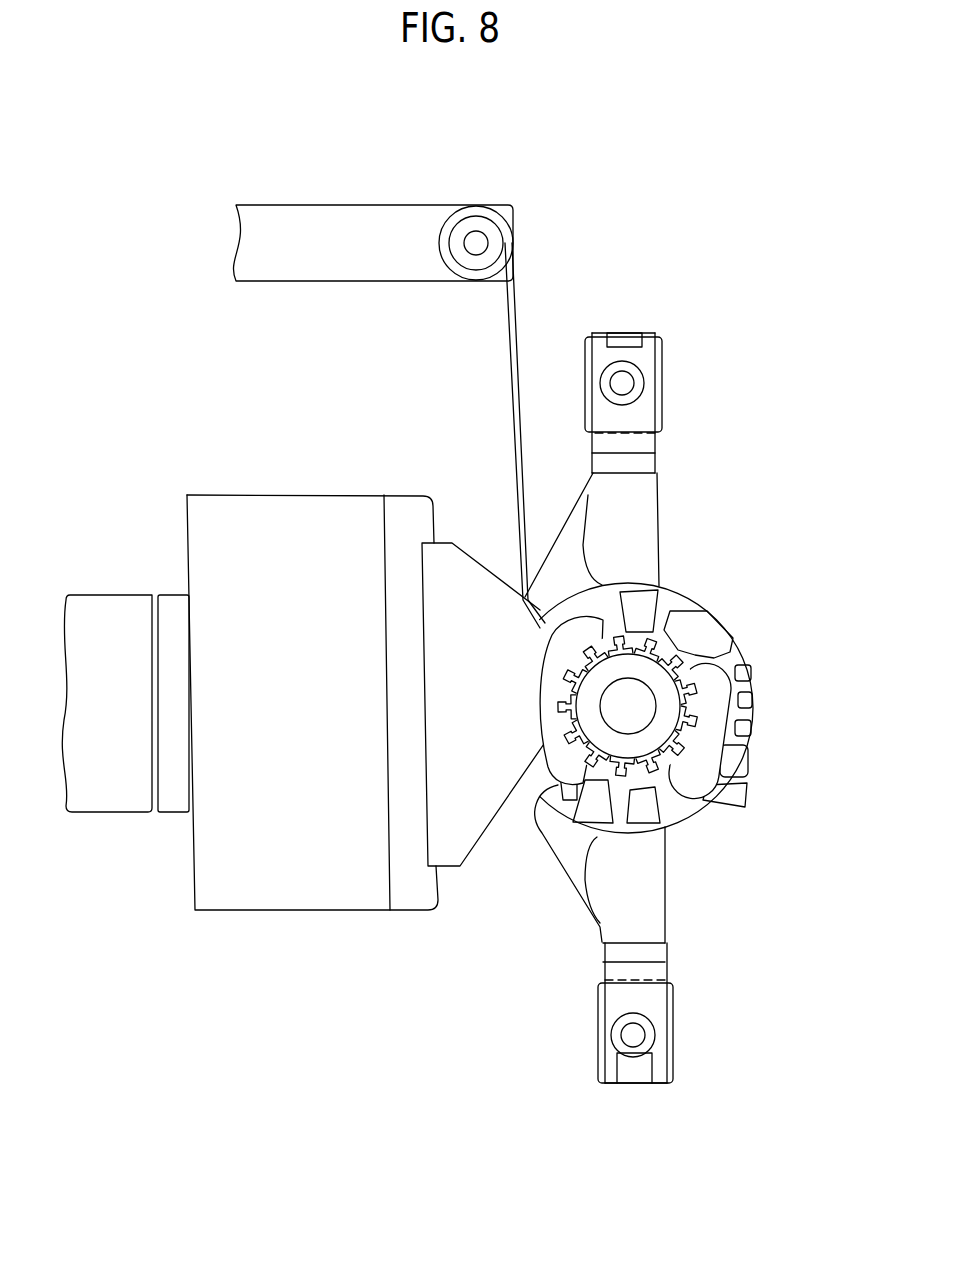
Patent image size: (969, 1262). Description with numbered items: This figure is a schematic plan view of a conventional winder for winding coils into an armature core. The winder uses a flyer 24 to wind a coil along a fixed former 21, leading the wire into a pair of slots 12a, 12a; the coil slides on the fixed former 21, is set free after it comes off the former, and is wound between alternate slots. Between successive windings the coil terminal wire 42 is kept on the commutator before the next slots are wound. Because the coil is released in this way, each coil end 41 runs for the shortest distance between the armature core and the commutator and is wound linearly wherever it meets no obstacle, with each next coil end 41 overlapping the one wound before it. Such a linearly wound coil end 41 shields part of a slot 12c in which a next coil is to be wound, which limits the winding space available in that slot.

The slots 12a is at (547, 615).
The slot 12c is at (727, 765).
The fixed former 21 is at (477, 653).
The flyer 24 is at (282, 283).
The coil end 41 is at (717, 675).
The coil terminal wire 42 is at (520, 370).